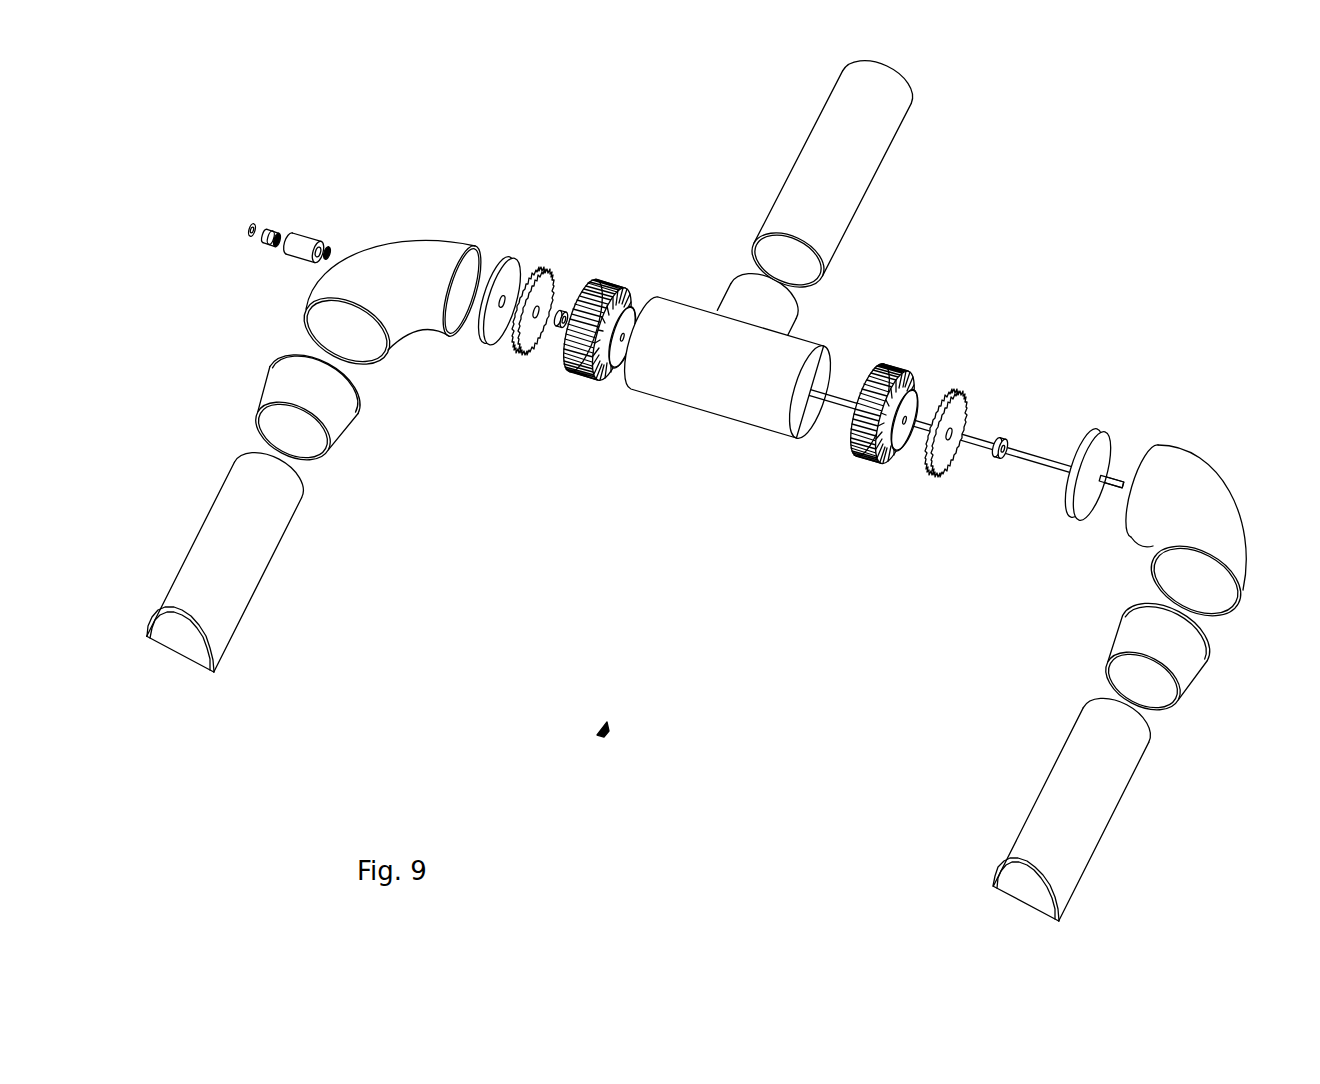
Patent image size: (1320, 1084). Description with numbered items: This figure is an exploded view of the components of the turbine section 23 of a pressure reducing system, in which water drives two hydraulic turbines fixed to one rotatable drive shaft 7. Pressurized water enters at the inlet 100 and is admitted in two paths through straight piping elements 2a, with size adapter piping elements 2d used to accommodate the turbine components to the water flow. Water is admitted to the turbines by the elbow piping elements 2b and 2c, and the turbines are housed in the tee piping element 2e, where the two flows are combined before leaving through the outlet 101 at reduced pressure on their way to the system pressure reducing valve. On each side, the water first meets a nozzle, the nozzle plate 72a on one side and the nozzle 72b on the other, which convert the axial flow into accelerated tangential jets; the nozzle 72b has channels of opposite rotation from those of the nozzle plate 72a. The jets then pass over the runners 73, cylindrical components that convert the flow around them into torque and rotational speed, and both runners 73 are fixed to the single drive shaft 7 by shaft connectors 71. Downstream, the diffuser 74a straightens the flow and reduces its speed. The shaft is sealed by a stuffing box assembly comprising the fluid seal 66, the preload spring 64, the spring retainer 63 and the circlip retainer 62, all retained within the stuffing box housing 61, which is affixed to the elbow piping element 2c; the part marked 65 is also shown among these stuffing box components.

The straight piping element 2a is at (290, 518).
The elbow piping element 2b is at (1143, 545).
The elbow piping element 2c is at (378, 363).
The size adapter piping element 2d is at (338, 437).
The tee piping element 2e is at (668, 408).
The drive shaft 7 is at (1043, 468).
The turbine section 23 is at (605, 728).
The stuffing box housing 61 is at (303, 228).
The circlip retainer 62 is at (252, 224).
The spring retainer 63 is at (263, 238).
The preload spring 64 is at (274, 238).
The cap 65 is at (276, 243).
The fluid seal 66 is at (327, 247).
The shaft connector 71 is at (558, 323).
The nozzle plate 72a is at (1097, 433).
The nozzle 72b is at (508, 260).
The runner 73 is at (544, 267).
The diffuser 74a is at (604, 290).
The inlet 100 is at (592, 812).
The outlet 101 is at (888, 52).